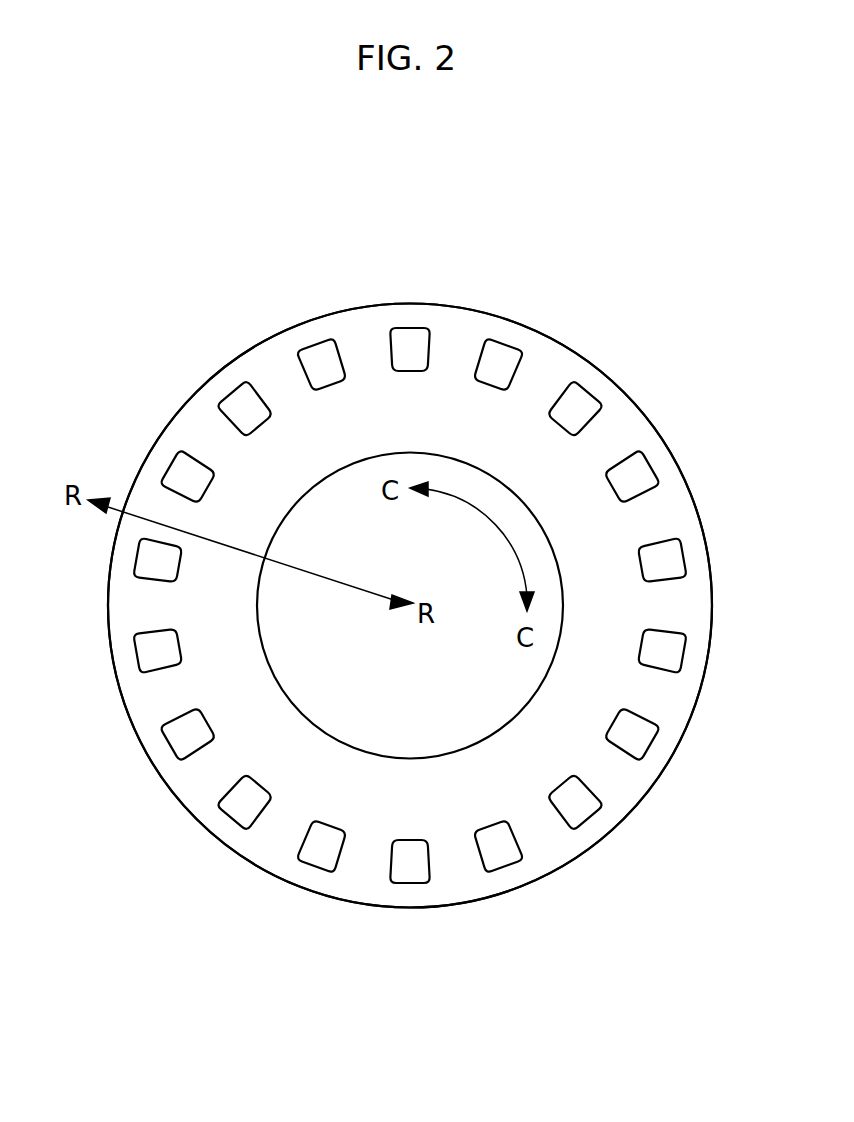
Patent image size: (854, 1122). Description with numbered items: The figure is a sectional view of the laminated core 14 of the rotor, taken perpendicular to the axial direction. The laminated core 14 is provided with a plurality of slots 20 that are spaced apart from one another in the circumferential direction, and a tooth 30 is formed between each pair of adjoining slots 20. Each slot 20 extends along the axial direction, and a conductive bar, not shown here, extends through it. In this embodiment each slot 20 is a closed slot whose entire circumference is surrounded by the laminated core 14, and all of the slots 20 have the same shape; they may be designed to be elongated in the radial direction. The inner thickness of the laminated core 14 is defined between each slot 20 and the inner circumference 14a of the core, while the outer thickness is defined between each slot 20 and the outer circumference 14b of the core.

The laminated core 14 is at (197, 353).
The inner circumference 14a is at (537, 689).
The outer circumference 14b is at (676, 443).
The slot 20 is at (598, 393).
The tooth 30 is at (466, 352).